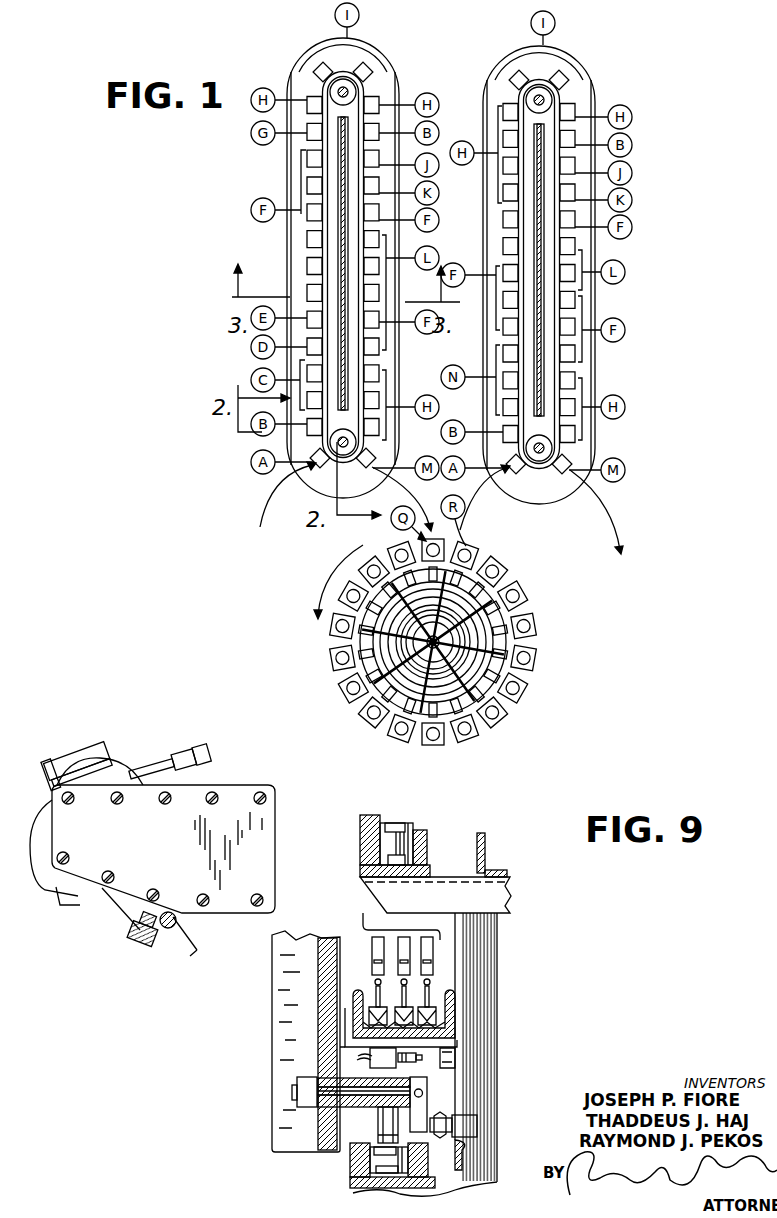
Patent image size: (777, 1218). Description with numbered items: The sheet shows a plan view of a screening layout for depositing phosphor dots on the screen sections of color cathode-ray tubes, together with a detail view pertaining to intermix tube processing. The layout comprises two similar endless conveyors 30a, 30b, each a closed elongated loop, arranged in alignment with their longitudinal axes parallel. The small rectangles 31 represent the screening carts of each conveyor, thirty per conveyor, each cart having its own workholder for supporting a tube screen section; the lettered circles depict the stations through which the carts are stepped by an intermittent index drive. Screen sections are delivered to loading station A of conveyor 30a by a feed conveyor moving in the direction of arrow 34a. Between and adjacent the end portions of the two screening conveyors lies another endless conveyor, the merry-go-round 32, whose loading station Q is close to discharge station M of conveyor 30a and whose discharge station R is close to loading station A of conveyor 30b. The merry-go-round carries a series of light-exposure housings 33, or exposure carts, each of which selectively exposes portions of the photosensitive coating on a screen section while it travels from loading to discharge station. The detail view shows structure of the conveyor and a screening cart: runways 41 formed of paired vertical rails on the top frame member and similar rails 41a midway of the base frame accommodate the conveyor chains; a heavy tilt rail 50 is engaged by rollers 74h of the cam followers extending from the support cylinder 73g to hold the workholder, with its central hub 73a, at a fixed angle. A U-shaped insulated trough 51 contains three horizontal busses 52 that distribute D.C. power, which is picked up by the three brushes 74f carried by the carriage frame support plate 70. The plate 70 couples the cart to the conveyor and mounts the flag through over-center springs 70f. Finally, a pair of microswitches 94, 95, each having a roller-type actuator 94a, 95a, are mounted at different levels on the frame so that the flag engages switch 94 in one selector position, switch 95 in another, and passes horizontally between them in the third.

In FIG. 1, the endless conveyor 30a is at (372, 46).
In FIG. 1, the endless conveyor 30b is at (570, 52).
In FIG. 1, the screening carts 31 is at (292, 263).
In FIG. 1, the merry-go-round conveyor 32 is at (446, 661).
In FIG. 1, the light-exposure housings 33 is at (506, 566).
In FIG. 1, the arrow 34a is at (270, 526).
In FIG. 9, the runways 41 is at (428, 845).
In FIG. 9, the rails 41a is at (356, 1163).
In FIG. 9, the tilt rail 50 is at (171, 930).
In FIG. 9, the U-shaped trough 51 is at (458, 1010).
In FIG. 9, the busses 52 is at (437, 986).
In FIG. 9, the carriage frame support plate 70 is at (300, 1078).
In FIG. 9, the springs 70f is at (428, 1110).
In FIG. 9, the central hub 73a is at (113, 752).
In FIG. 9, the cylinder 73g is at (176, 770).
In FIG. 9, the brushes 74f is at (370, 984).
In FIG. 9, the rollers 74h is at (144, 942).
In FIG. 9, the microswitch 94 is at (468, 1131).
In FIG. 9, the roller-type actuator 94a is at (463, 1153).
In FIG. 9, the microswitch 95 is at (357, 1048).
In FIG. 9, the roller-type actuator 95a is at (425, 1058).